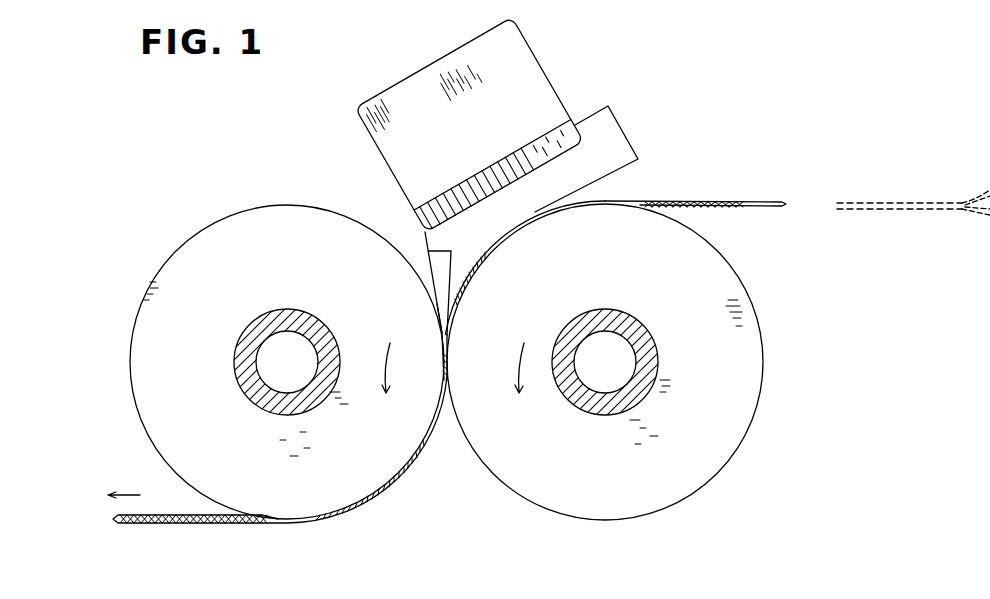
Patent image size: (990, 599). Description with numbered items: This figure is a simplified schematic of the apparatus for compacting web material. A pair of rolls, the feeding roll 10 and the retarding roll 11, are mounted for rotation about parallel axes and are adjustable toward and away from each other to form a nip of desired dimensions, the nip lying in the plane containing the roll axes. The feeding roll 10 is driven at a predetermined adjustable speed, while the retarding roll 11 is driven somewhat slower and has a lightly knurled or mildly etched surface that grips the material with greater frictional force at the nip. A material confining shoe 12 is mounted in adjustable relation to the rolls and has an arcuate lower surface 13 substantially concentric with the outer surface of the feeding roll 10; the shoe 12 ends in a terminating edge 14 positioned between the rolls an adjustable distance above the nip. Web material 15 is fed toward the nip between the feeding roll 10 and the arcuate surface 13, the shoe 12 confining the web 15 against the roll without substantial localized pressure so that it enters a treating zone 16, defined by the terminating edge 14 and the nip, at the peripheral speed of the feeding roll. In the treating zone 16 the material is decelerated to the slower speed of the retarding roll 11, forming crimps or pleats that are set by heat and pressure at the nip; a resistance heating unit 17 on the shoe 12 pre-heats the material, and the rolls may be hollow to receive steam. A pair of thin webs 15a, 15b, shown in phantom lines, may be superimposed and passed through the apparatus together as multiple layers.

The feeding roll 10 is at (744, 291).
The retarding roll 11 is at (153, 278).
The material confining shoe 12 is at (624, 152).
The arcuate lower surface 13 is at (478, 268).
The terminating edge 14 is at (440, 334).
The web material 15 is at (717, 202).
The web 15a is at (966, 201).
The web 15b is at (968, 212).
The treating zone 16 is at (450, 340).
The resistance heating unit 17 is at (546, 91).